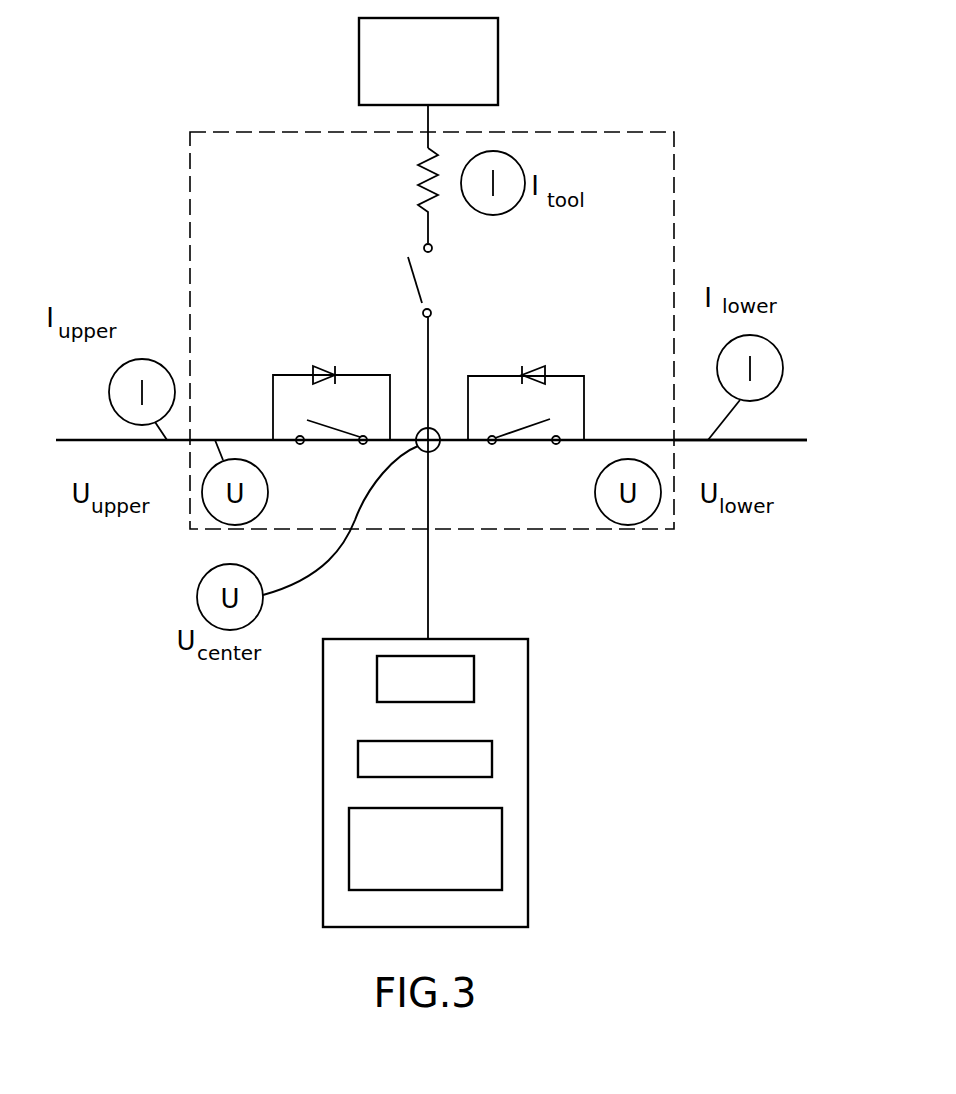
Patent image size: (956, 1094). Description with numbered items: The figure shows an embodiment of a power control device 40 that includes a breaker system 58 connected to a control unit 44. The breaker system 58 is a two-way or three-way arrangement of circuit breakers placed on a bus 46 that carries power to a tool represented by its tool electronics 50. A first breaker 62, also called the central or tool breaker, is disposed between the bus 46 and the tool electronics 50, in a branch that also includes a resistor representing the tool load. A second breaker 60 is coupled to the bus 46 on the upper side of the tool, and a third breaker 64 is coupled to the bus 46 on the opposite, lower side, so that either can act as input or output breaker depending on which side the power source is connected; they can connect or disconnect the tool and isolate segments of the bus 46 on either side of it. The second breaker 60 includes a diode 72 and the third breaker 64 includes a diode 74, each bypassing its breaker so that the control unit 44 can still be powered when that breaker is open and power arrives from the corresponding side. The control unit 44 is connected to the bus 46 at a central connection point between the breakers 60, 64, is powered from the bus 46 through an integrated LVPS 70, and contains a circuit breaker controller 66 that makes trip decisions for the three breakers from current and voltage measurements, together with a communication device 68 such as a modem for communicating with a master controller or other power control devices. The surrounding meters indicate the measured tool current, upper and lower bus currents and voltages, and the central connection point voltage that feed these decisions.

The power control device 40 is at (44, 36).
The tool electronics 50 is at (488, 45).
The breaker system 58 is at (674, 203).
The first breaker 62 is at (399, 263).
The second breaker 60 is at (311, 388).
The diode 72 is at (330, 371).
The diode 74 is at (538, 371).
The third breaker 64 is at (561, 398).
The bus 46 is at (792, 440).
The control unit 44 is at (428, 753).
The integrated LVPS 70 is at (452, 665).
The communication device 68 is at (365, 752).
The circuit breaker controller 66 is at (490, 842).